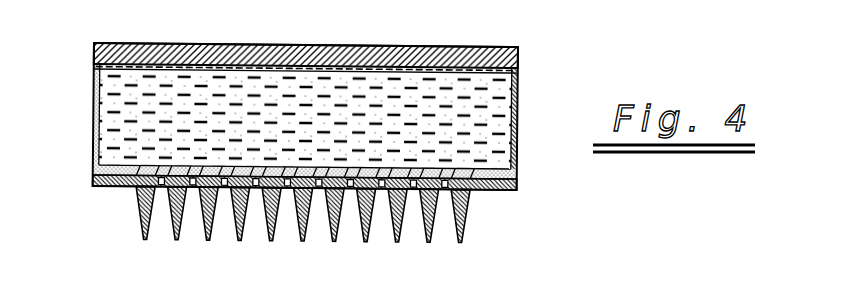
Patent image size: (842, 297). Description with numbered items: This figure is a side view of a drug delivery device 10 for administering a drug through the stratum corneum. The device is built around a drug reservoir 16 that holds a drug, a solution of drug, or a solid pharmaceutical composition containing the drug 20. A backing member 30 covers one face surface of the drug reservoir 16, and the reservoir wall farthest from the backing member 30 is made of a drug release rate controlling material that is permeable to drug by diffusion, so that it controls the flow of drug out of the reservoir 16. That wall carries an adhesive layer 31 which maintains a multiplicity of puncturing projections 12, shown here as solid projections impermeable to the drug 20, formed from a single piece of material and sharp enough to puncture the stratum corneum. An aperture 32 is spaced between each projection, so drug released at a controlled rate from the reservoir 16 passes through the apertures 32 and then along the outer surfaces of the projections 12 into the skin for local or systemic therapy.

The drug delivery device 10 is at (528, 98).
The puncturing projections 12 is at (173, 223).
The drug reservoir 16 is at (313, 85).
The drug 20 is at (266, 192).
The backing member 30 is at (95, 52).
The adhesive layer 31 is at (108, 188).
The aperture 32 is at (383, 190).